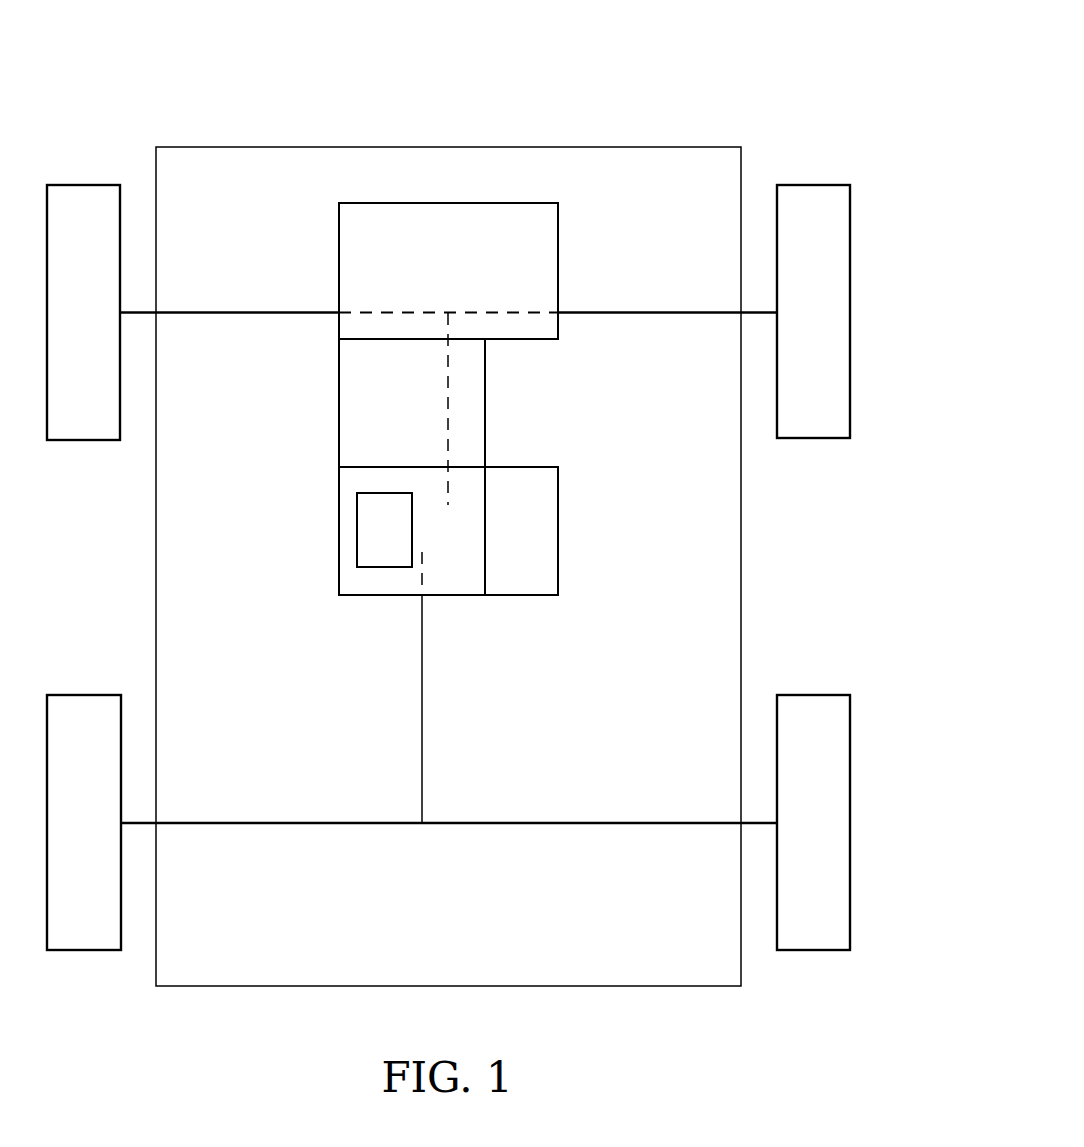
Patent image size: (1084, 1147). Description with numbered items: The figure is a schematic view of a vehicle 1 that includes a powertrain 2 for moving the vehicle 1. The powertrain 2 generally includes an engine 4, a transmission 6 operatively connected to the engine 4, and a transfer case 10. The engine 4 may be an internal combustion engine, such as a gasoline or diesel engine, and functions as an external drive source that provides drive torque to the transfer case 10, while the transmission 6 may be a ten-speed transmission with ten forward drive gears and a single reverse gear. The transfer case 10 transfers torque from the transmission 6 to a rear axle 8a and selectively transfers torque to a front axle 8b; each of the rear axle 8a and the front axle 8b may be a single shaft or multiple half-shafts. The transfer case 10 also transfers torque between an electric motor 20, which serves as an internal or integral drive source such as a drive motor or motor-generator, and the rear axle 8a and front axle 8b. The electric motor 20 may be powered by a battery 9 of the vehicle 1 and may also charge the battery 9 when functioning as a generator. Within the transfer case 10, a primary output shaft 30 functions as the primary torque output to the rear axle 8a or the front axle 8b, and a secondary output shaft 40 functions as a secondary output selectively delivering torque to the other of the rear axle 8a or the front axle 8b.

The vehicle 1 is at (190, 73).
The powertrain 2 is at (380, 311).
The engine 4 is at (440, 284).
The transmission 6 is at (404, 415).
The rear axle 8a is at (566, 823).
The front axle 8b is at (593, 312).
The battery 9 is at (512, 544).
The transfer case 10 is at (427, 544).
The electric motor 20 is at (372, 544).
The primary output shaft 30 is at (422, 568).
The secondary output shaft 40 is at (448, 487).